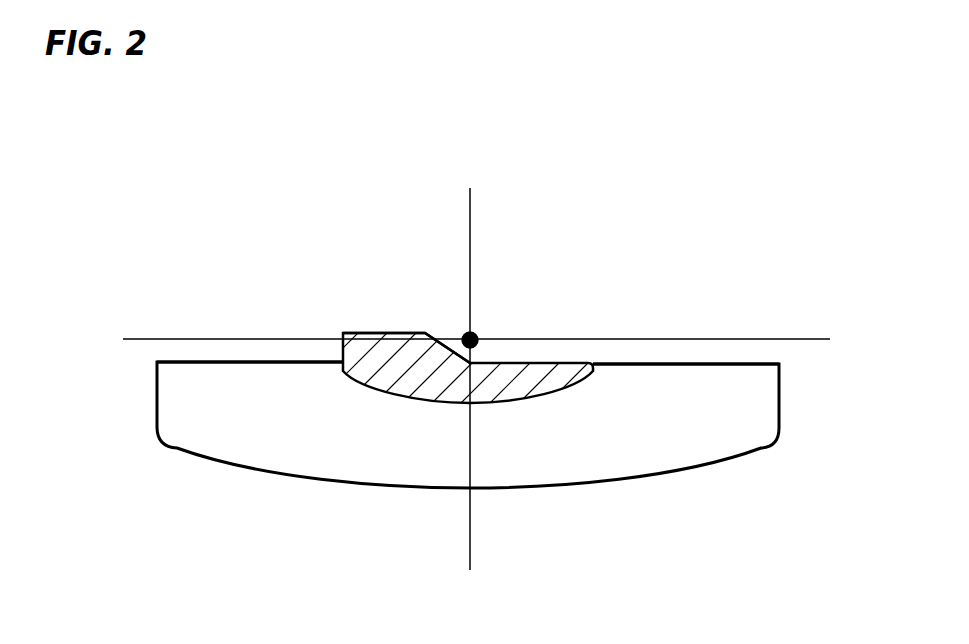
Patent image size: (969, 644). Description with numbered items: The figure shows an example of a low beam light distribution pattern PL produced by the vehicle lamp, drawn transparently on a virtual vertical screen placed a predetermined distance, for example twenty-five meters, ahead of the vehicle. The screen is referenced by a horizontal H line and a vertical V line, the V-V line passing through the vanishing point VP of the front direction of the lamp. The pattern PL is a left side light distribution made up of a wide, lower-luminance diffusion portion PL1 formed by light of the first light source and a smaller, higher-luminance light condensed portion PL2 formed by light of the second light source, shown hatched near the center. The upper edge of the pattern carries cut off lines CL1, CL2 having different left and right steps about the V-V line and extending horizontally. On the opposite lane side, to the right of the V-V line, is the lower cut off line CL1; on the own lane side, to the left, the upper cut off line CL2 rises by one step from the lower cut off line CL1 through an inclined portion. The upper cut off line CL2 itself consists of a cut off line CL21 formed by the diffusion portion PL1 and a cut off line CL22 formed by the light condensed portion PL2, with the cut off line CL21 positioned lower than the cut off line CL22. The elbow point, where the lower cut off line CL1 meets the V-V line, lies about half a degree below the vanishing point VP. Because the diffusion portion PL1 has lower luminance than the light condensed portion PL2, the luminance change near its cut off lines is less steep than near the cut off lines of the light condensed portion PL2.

The low beam light distribution pattern PL is at (468, 429).
The diffusion portion PL1 is at (593, 485).
The light condensed portion PL2 is at (543, 372).
The lower cut off line CL1 is at (722, 365).
The upper cut off line CL2 is at (313, 251).
The cut off line CL21 is at (247, 361).
The cut off line CL22 is at (370, 333).
The vanishing point VP is at (484, 324).
The H-H line H is at (477, 338).
The V-V line V is at (469, 378).